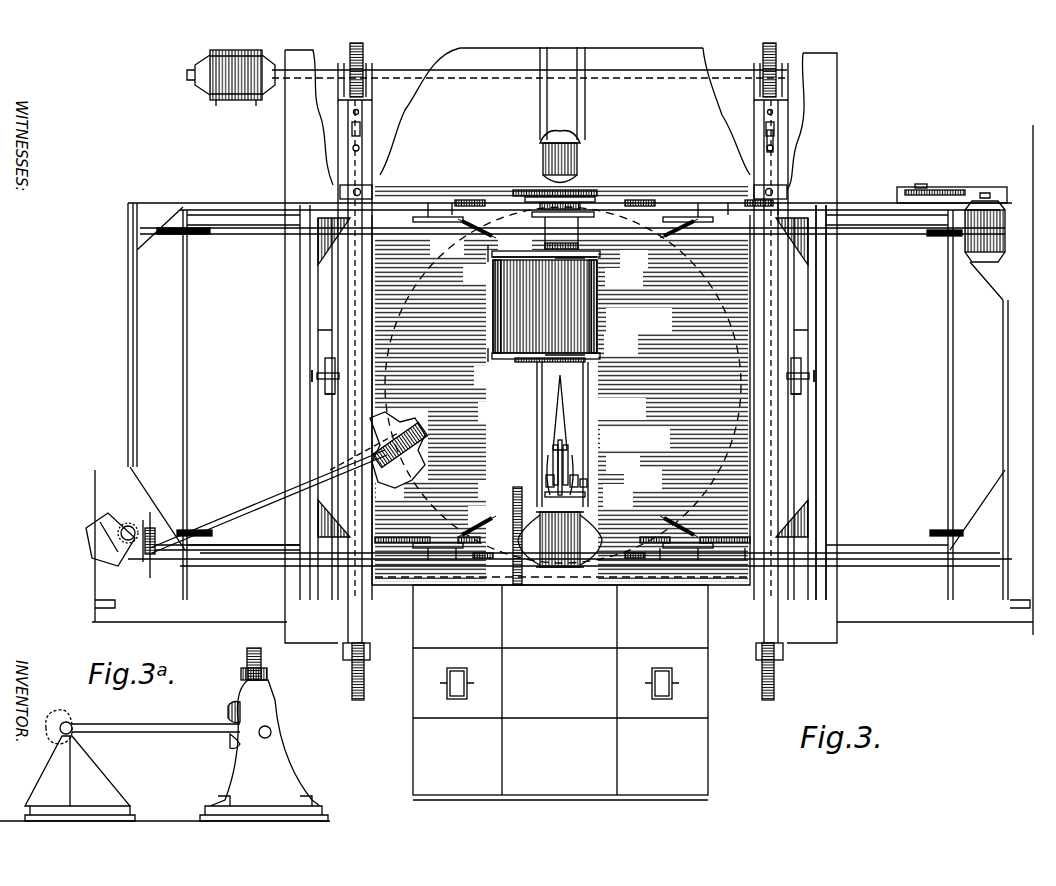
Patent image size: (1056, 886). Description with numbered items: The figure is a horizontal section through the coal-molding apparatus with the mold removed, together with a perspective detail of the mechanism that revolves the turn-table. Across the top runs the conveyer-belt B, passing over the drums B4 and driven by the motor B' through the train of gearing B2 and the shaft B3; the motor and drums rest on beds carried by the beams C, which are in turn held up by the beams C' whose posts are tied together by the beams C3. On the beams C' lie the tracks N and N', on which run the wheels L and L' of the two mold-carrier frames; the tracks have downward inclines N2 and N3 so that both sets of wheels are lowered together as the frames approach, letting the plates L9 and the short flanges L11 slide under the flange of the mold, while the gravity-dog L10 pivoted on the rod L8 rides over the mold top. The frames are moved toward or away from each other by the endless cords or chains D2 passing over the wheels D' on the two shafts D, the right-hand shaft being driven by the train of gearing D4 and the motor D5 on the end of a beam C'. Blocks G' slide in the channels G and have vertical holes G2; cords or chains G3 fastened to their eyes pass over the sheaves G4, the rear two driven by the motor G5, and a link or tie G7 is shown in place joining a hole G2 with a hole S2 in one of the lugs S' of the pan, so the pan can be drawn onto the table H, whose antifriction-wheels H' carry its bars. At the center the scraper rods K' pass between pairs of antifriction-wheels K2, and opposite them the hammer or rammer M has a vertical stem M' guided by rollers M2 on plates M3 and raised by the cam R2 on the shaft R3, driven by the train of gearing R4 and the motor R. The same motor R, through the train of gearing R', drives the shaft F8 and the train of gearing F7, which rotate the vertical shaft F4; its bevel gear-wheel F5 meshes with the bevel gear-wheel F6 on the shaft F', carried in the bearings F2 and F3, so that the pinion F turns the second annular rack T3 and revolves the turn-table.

In FIG. 3, the motor G5 is at (228, 103).
In FIG. 3, the sheaves G4 is at (366, 52).
In FIG. 3, the channels G is at (557, 361).
In FIG. 3, the blocks G' is at (557, 121).
In FIG. 3, the vertical holes G2 is at (352, 143).
In FIG. 3, the cords or chains G3 is at (363, 162).
In FIG. 3, the links or ties G7 is at (773, 136).
In FIG. 3, the vertical holes S2 is at (353, 192).
In FIG. 3, the ears or lugs S' is at (606, 169).
In FIG. 3, the beams C' is at (570, 377).
In FIG. 3, the wheels L' is at (555, 383).
In FIG. 3, the wheels L is at (567, 382).
In FIG. 3, the tracks N is at (587, 377).
In FIG. 3, the inclines N2 is at (486, 200).
In FIG. 3, the inclines N3 is at (780, 204).
In FIG. 3, the tracks N' is at (572, 382).
In FIG. 3, the shafts D is at (568, 405).
In FIG. 3, the wheels D' is at (567, 382).
In FIG. 3, the endless cords or chains D2 is at (230, 214).
In FIG. 3, the train of gearing D4 is at (945, 199).
In FIG. 3, the motor D5 is at (1000, 196).
In FIG. 3, the beams C3 is at (128, 368).
In FIG. 3, the rods L8 is at (320, 335).
In FIG. 3, the plates L9 is at (322, 395).
In FIG. 3, the gravity-dog L10 is at (318, 378).
In FIG. 3, the short flange L11 is at (470, 230).
In FIG. 3, the beams C is at (559, 277).
In FIG. 3, the motor B' is at (579, 149).
In FIG. 3, the train of gearing B2 is at (582, 186).
In FIG. 3, the shaft B3 is at (594, 216).
In FIG. 3, the antifriction-wheels K2 is at (544, 247).
In FIG. 3, the rods K' is at (582, 304).
In FIG. 3, the drums B4 is at (495, 263).
In FIG. 3, the conveyer-belt B is at (559, 306).
In FIG. 3, the hammer or rammer M is at (524, 412).
In FIG. 3, the vertical stem M' is at (597, 452).
In FIG. 3, the rollers M2 is at (566, 441).
In FIG. 3, the plates M3 is at (546, 461).
In FIG. 3, the shaft R3 is at (546, 479).
In FIG. 3, the train of gearing R4 is at (592, 489).
In FIG. 3, the cam R2 is at (545, 494).
In FIG. 3, the train of gearing R' is at (544, 545).
In FIG. 3, the motor R is at (570, 527).
In FIG. 3, the second annular rack T3 is at (399, 457).
In FIG. 3, the pinion F is at (409, 418).
In FIG. 3A, the pinion F is at (59, 717).
In FIG. 3, the shaft F' is at (268, 501).
In FIG. 3A, the shaft F' is at (156, 715).
In FIG. 3, the shaft F4 is at (123, 527).
In FIG. 3A, the shaft F4 is at (260, 655).
In FIG. 3, the bevel gear-wheel F6 is at (90, 549).
In FIG. 3A, the bevel gear-wheel F6 is at (234, 744).
In FIG. 3, the train of gearing F7 is at (143, 556).
In FIG. 3, the shaft F8 is at (245, 562).
In FIG. 3, the table H is at (548, 692).
In FIG. 3, the antifriction-wheels H' is at (559, 680).
In FIG. 3A, the bearing F2 is at (96, 780).
In FIG. 3A, the bearing F3 is at (280, 758).
In FIG. 3A, the bevel gear-wheel F5 is at (228, 712).